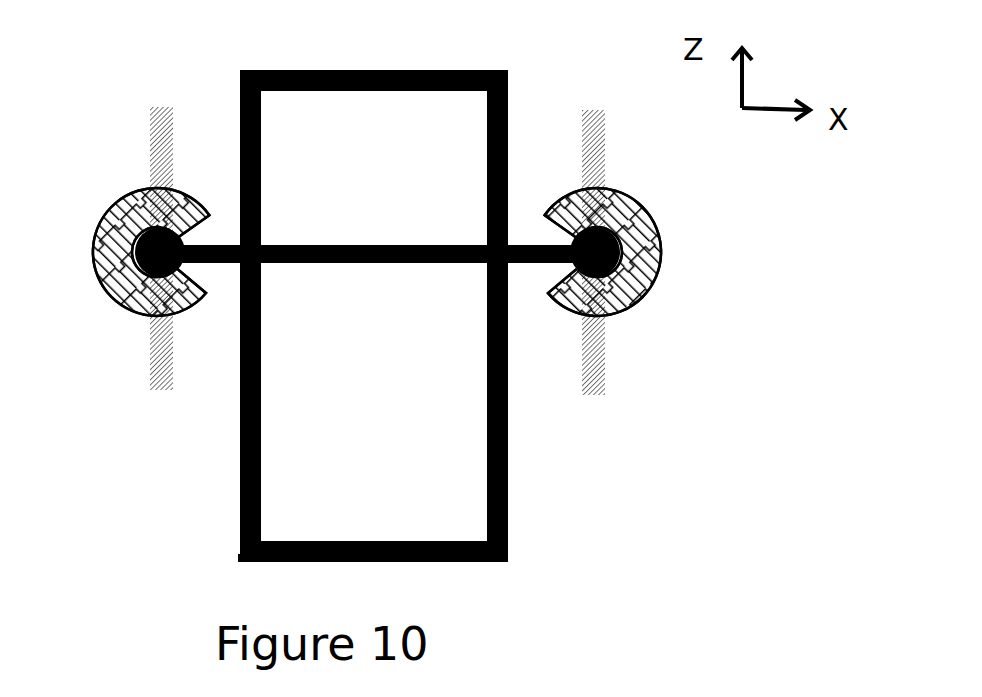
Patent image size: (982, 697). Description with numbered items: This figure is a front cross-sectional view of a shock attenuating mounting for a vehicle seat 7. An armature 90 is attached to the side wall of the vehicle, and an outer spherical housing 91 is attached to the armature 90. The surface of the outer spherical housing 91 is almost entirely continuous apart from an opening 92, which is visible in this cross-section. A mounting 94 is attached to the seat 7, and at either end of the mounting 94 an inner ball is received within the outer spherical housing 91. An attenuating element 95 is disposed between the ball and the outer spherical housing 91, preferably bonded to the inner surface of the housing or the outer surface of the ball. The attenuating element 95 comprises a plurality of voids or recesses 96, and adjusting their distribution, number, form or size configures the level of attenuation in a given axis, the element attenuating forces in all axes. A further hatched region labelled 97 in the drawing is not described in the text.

The seat 7 is at (508, 72).
The armature 90 is at (152, 125).
The outer spherical housing 91 is at (110, 208).
The opening 92 is at (231, 286).
The mounting 94 is at (350, 265).
The attenuating element 95 is at (620, 310).
The voids or recesses 96 is at (604, 177).
The right hatched disc 97 is at (650, 225).